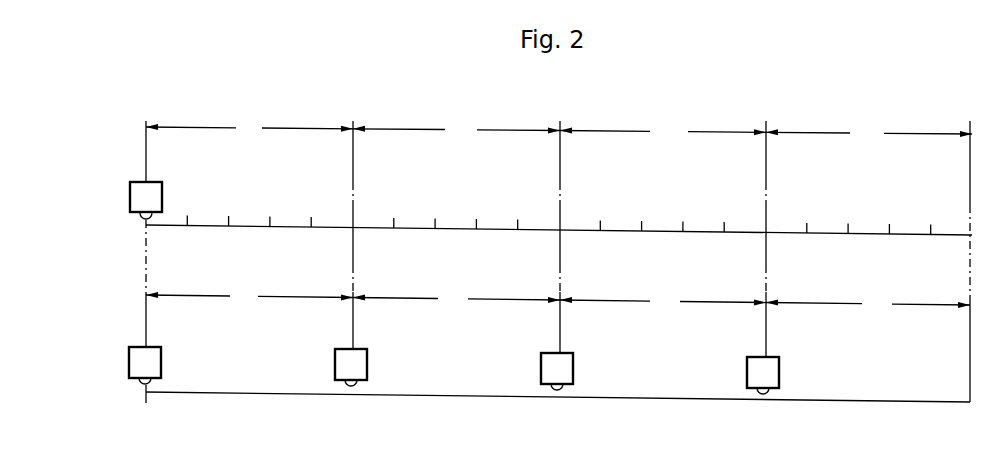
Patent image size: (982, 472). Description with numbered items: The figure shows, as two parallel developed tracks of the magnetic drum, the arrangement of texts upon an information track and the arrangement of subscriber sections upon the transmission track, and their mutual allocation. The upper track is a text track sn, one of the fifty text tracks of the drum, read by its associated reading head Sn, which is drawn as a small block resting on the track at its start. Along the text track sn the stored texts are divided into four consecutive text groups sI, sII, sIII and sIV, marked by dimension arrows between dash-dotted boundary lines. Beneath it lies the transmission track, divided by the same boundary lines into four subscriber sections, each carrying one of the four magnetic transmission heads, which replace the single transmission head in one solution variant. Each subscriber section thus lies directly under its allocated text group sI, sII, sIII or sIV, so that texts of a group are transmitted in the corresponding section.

The reading head Sn is at (126, 262).
The text track sn is at (541, 231).
The text group sI is at (249, 128).
The text group sII is at (456, 130).
The text group sIII is at (663, 133).
The text group sIV is at (869, 136).